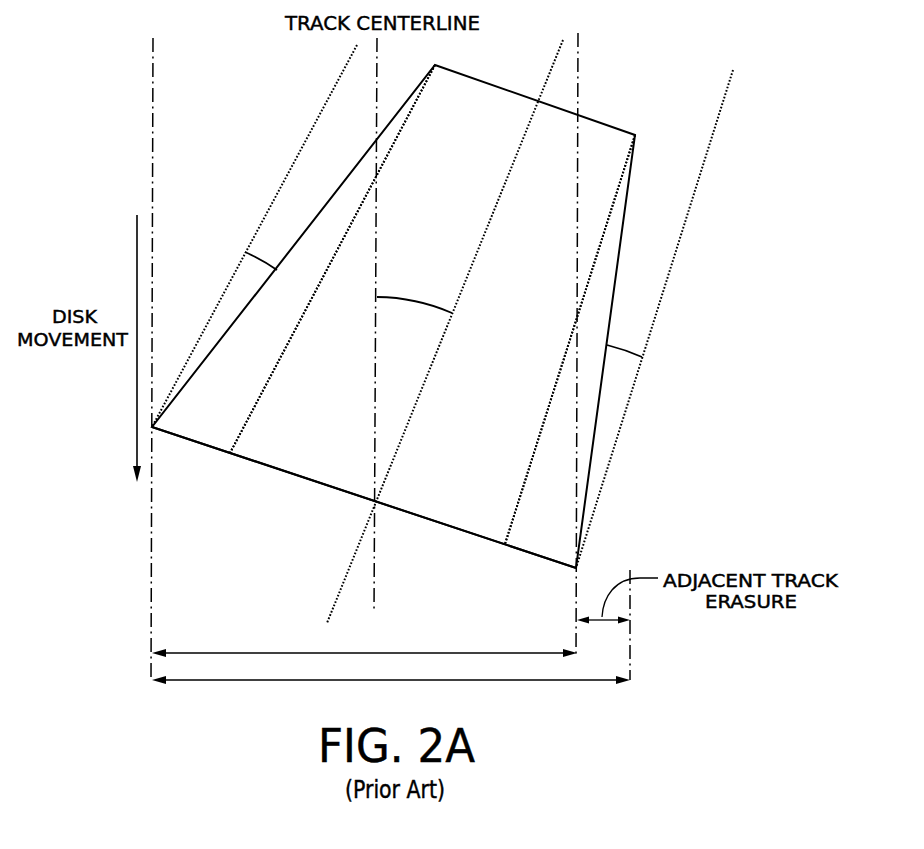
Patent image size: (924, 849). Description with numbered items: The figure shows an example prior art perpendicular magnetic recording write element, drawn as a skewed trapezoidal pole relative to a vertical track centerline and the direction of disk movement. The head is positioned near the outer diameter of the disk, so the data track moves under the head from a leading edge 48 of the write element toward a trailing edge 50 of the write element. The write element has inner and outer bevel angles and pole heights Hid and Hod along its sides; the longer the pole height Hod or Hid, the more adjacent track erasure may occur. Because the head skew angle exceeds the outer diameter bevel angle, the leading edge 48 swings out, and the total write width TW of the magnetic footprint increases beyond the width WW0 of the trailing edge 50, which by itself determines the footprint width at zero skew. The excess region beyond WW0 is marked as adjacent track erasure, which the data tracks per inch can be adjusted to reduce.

The leading edge 48 is at (593, 113).
The trailing edge 50 is at (484, 543).
The inner diameter pole height Hid is at (263, 392).
The outer diameter pole height Hod is at (535, 443).
The width of the trailing edge WW0 is at (364, 642).
The total write width TW is at (391, 690).